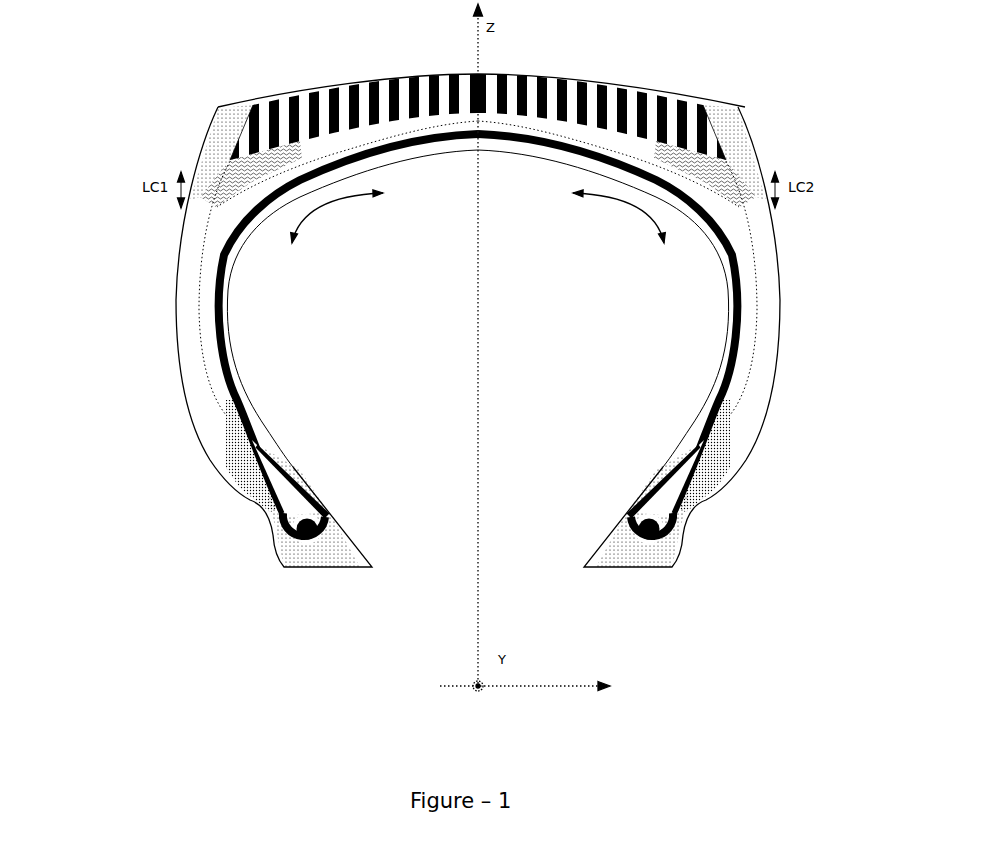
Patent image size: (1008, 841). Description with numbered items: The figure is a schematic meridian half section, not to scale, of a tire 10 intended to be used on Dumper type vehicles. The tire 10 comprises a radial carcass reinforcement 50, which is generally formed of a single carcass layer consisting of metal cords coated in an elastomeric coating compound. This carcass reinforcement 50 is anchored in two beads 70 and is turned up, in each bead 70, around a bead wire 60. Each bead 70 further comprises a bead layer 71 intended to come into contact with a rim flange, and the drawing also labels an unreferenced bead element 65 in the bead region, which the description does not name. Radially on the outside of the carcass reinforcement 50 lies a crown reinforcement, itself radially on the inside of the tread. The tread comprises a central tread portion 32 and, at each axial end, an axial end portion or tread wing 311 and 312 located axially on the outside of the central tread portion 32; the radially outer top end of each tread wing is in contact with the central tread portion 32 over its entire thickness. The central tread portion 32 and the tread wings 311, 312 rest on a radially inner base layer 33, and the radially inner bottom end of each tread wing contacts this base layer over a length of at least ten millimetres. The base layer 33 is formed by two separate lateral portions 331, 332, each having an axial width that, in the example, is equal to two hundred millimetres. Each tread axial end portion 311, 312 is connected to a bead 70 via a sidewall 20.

The tire 10 is at (387, 79).
The central tread portion 32 is at (307, 97).
The tread wing 311 is at (218, 109).
The tread wing 312 is at (745, 109).
The base layer 33 is at (506, 170).
The lateral portion of the base layer 331 is at (292, 242).
The lateral portion of the base layer 332 is at (664, 242).
The sidewall 20 is at (184, 263).
The carcass reinforcement 50 is at (228, 420).
The bead 70 is at (80, 500).
The bead filler 65 is at (292, 504).
The bead wire 60 is at (295, 525).
The bead layer 71 is at (283, 552).